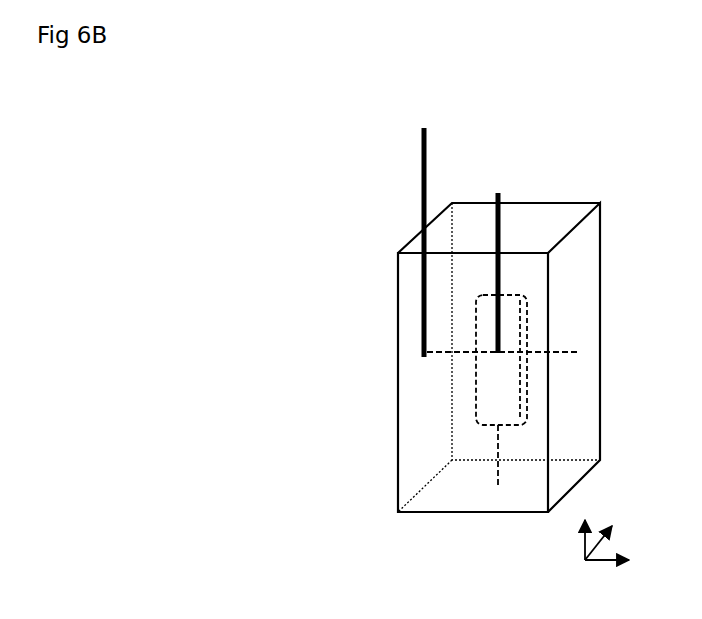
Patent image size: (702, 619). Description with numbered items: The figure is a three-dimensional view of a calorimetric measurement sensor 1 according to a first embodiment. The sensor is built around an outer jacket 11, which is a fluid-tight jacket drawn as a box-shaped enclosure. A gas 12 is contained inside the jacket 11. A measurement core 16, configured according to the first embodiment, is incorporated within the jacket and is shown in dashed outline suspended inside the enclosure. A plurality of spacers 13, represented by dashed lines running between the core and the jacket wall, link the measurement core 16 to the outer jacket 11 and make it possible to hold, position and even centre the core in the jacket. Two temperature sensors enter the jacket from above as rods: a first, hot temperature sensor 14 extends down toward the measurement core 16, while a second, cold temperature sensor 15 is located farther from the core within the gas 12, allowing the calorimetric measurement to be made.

The measurement sensor 1 is at (405, 218).
The outer jacket 11 is at (586, 203).
The gas 12 is at (485, 246).
The spacers 13 is at (497, 455).
The hot temperature sensor 14 is at (500, 193).
The cold temperature sensor 15 is at (424, 128).
The measurement core 16 is at (468, 328).